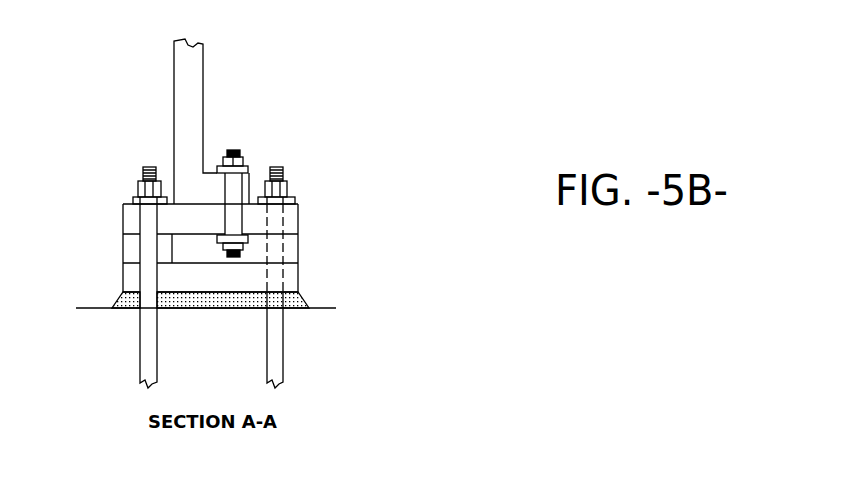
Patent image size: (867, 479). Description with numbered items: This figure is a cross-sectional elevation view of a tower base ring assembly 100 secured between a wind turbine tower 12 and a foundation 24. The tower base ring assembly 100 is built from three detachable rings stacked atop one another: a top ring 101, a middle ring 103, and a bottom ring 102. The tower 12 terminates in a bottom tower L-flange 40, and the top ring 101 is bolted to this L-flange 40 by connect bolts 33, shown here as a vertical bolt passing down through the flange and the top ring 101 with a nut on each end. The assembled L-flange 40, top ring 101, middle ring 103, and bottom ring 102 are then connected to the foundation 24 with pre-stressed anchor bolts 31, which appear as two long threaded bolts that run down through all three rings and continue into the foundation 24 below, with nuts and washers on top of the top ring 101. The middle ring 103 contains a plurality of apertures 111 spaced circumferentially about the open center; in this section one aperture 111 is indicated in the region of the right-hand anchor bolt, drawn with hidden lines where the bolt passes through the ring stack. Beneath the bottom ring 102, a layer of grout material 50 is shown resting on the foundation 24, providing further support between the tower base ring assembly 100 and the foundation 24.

The tower 12 is at (187, 67).
The foundation 24 is at (108, 303).
The anchor bolts 31 is at (145, 170).
The connect bolts 33 is at (233, 205).
The tower L-flange 40 is at (248, 182).
The grout material 50 is at (302, 303).
The tower base ring assembly 100 is at (230, 239).
The detachable top ring 101 is at (133, 219).
The detachable bottom ring 102 is at (133, 284).
The detachable middle ring 103 is at (133, 251).
The apertures 111 is at (290, 250).